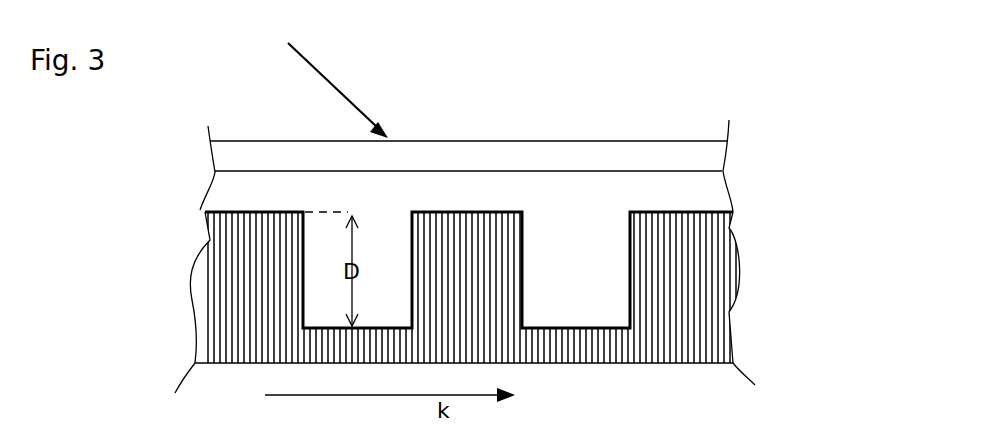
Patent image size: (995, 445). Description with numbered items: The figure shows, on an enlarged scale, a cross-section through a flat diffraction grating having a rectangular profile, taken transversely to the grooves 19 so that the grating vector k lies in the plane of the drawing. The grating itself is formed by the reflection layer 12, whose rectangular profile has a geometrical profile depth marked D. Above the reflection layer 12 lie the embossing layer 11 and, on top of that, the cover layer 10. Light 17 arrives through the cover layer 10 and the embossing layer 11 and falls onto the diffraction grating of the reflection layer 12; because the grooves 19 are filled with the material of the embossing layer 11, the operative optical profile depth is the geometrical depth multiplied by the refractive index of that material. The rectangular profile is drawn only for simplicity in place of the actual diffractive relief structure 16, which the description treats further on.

The cover layer 10 is at (683, 158).
The embossing layer 11 is at (230, 189).
The reflection layer 12 is at (735, 212).
The diffractive relief structure 16 is at (645, 208).
The light 17 is at (355, 102).
The grooves 19 is at (395, 230).